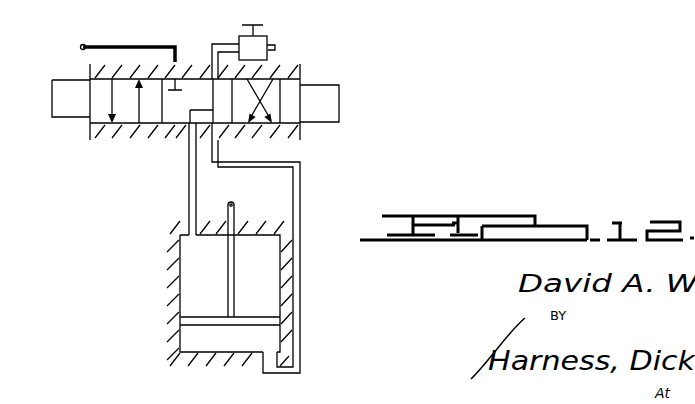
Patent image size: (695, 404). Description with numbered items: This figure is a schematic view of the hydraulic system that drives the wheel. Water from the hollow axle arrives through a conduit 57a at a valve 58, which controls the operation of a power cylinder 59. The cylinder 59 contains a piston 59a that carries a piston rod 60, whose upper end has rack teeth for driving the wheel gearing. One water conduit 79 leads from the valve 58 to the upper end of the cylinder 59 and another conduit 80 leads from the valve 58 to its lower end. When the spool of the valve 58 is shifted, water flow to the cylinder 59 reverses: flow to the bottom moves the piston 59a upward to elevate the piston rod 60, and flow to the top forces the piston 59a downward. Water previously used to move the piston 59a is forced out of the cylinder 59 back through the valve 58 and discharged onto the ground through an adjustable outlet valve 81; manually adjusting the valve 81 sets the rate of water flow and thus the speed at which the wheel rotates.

The conduit 57a is at (118, 42).
The adjustable outlet valve 81 is at (269, 41).
The valve 58 is at (298, 84).
The water conduit 79 is at (188, 181).
The conduit 80 is at (301, 253).
The piston rod 60 is at (233, 213).
The power cylinder 59 is at (172, 277).
The piston 59a is at (230, 320).